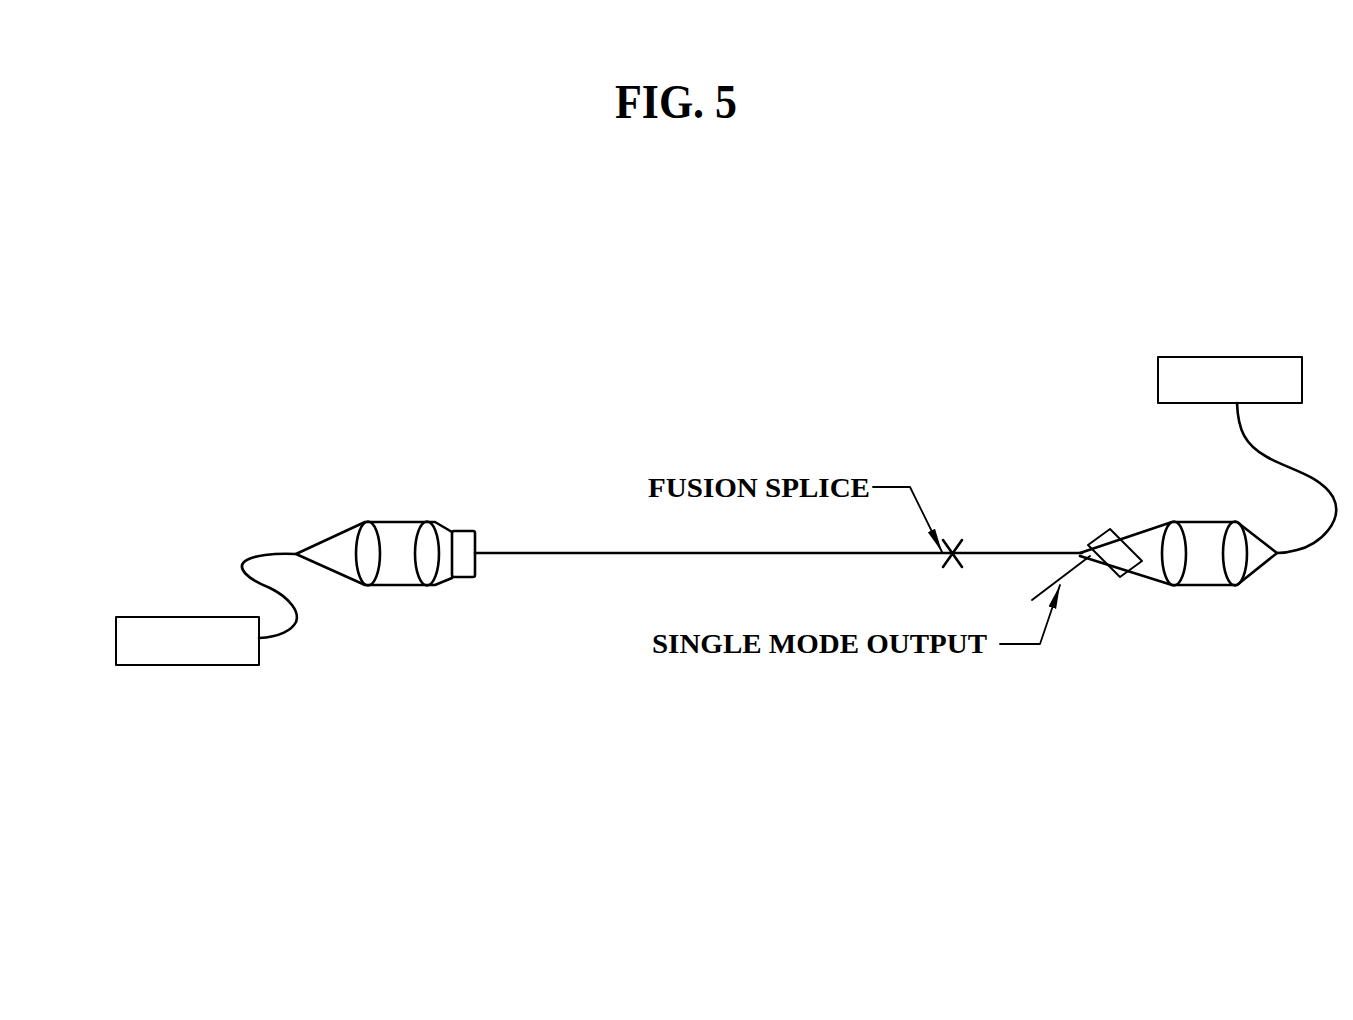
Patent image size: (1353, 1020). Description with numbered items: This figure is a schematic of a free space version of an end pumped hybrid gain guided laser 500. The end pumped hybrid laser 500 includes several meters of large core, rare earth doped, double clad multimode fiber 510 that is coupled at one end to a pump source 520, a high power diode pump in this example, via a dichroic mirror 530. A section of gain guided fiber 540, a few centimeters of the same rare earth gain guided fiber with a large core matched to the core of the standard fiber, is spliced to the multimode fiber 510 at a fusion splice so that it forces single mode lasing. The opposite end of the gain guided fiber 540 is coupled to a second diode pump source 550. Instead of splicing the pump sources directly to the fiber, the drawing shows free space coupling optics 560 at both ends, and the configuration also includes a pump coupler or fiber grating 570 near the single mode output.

The end pumped hybrid laser 500 is at (405, 253).
The multimode fiber 510 is at (602, 550).
The pump source 520 is at (197, 615).
The mirror 530 is at (463, 532).
The gain guided element 540 is at (1013, 552).
The pump source 550 is at (1227, 357).
The coupling optics 560 is at (428, 590).
The pump coupler 570 is at (1127, 578).